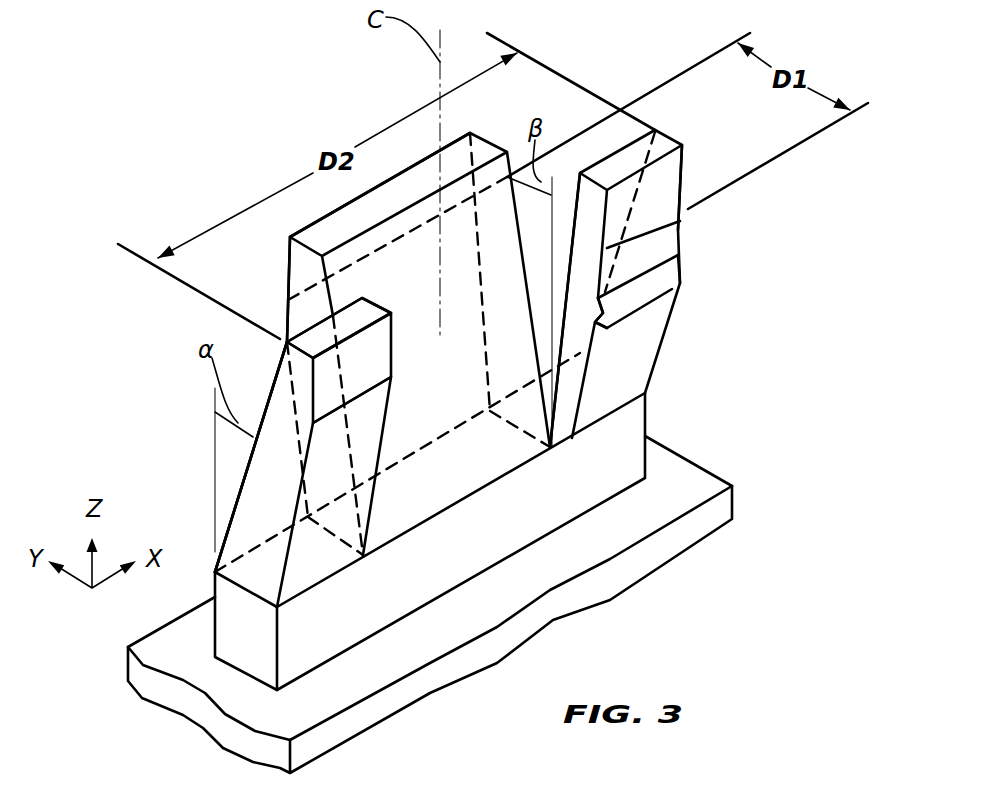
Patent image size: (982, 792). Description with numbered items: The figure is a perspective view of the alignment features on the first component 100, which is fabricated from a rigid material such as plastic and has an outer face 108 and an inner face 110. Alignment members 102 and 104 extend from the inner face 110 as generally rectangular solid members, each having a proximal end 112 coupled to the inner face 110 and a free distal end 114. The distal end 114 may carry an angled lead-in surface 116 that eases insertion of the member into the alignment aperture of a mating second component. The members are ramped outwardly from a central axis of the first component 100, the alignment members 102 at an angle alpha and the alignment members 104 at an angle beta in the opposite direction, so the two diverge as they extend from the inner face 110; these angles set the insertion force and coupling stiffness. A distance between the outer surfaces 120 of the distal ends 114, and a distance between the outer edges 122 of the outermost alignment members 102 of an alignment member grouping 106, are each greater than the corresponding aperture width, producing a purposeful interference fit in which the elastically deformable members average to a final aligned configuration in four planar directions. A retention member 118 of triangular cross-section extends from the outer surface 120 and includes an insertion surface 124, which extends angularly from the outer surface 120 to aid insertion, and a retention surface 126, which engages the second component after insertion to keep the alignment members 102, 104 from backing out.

The first component 100 is at (687, 481).
The alignment member 102 is at (664, 127).
The alignment member 104 is at (400, 168).
The alignment member grouping 106 is at (553, 492).
The outer face 108 is at (688, 556).
The inner face 110 is at (670, 467).
The proximal end 112 is at (294, 578).
The distal end 114 is at (492, 139).
The angled lead-in surface 116 is at (360, 365).
The retention member 118 is at (685, 265).
The alignment member outer surface 120 is at (310, 228).
The outer edge 122 is at (684, 145).
The insertion surface 124 is at (681, 284).
The retention surface 126 is at (598, 324).